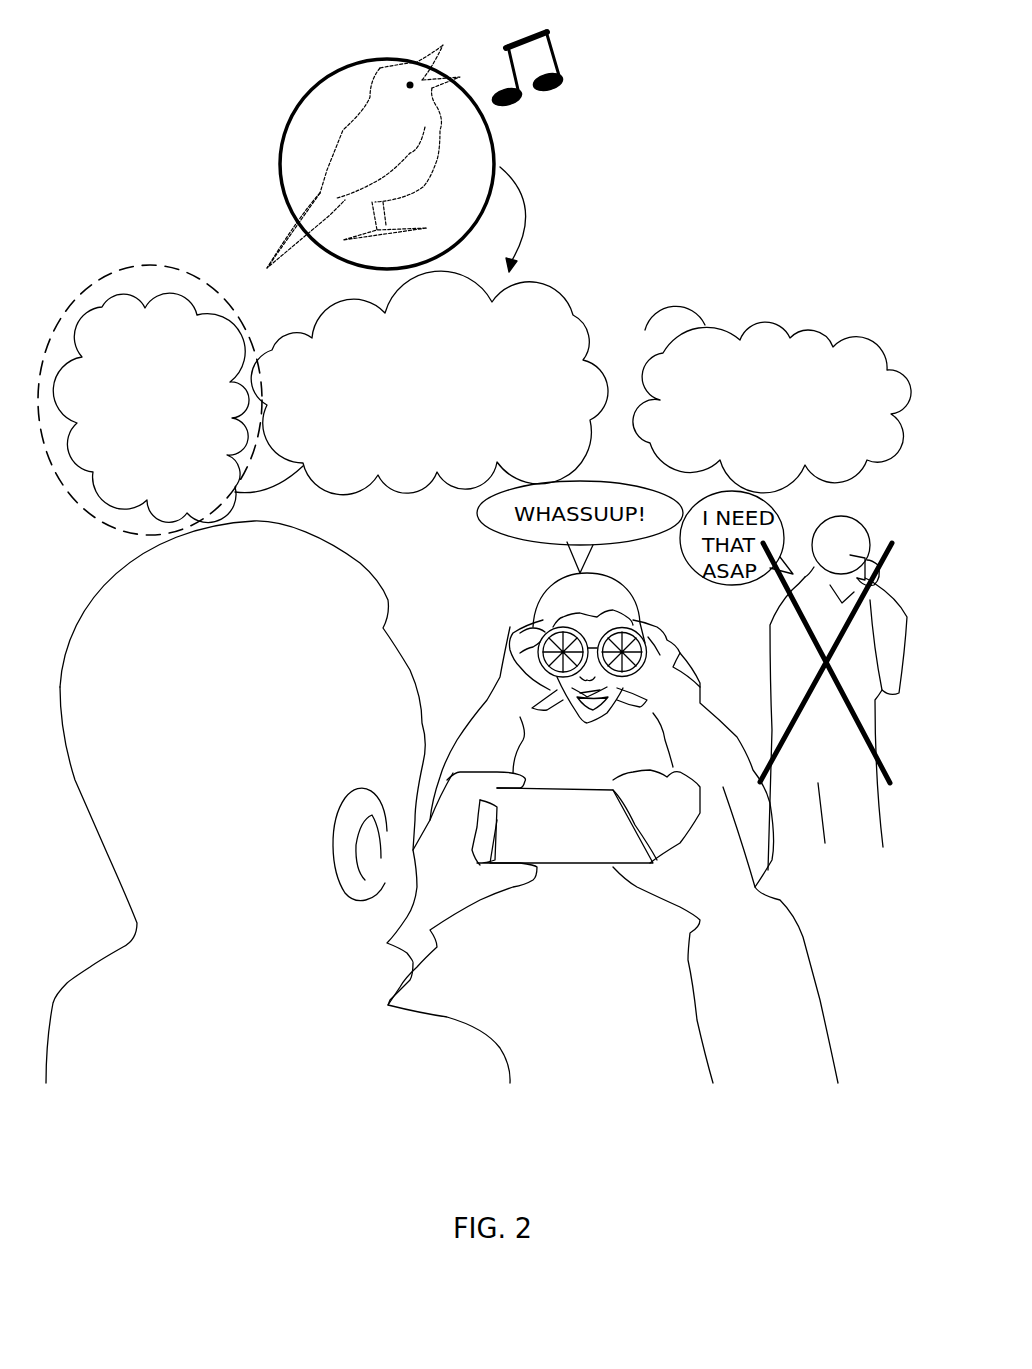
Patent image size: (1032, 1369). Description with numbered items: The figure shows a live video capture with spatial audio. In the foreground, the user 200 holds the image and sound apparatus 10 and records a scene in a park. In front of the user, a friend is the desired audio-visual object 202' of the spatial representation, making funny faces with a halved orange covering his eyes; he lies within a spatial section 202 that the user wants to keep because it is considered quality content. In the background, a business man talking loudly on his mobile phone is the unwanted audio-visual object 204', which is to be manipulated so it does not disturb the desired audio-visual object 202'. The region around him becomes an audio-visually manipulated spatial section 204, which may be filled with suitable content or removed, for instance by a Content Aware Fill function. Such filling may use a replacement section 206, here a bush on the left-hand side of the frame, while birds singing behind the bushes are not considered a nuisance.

The image and sound apparatus 10 is at (578, 836).
The user 200 is at (253, 662).
The spatial section 202 is at (612, 818).
The desired audio-visual object 202' is at (589, 648).
The audio-visually manipulated spatial section 204 is at (833, 674).
The unwanted audio-visual object 204' is at (842, 551).
The replacement section 206 is at (133, 265).